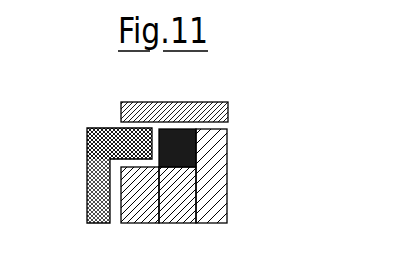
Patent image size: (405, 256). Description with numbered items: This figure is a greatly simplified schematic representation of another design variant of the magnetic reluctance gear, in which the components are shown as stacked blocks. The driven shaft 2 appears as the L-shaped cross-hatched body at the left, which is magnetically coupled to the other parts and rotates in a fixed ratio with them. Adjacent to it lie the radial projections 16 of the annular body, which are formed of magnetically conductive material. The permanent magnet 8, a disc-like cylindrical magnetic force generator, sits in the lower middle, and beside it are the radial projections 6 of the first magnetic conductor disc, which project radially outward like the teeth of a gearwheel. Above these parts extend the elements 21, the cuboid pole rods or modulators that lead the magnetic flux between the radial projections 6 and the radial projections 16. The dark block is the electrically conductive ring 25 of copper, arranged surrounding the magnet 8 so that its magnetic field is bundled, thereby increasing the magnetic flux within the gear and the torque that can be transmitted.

The driven shaft 2 is at (95, 205).
The radial projections 6 is at (215, 179).
The magnet 8 is at (178, 215).
The radial projections 16 is at (130, 148).
The elements 21 is at (213, 117).
The electrically conductive ring 25 is at (195, 147).